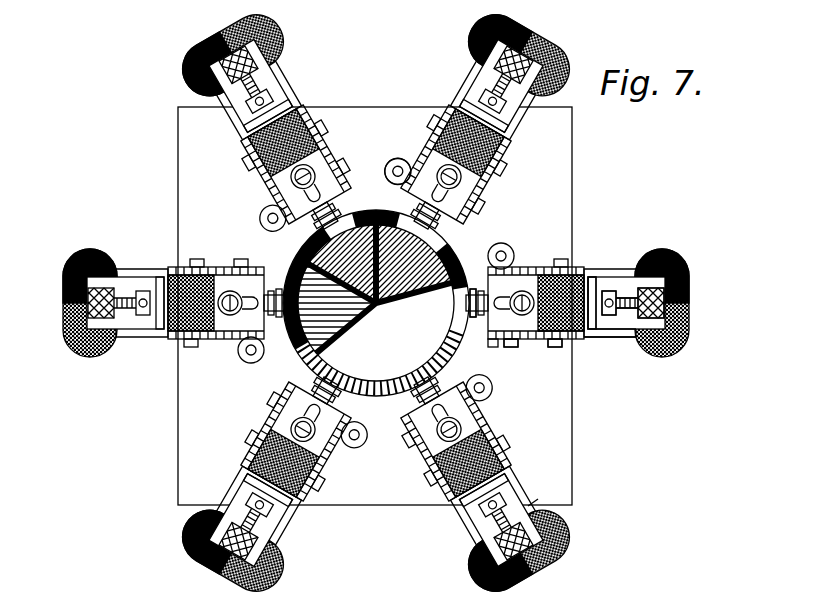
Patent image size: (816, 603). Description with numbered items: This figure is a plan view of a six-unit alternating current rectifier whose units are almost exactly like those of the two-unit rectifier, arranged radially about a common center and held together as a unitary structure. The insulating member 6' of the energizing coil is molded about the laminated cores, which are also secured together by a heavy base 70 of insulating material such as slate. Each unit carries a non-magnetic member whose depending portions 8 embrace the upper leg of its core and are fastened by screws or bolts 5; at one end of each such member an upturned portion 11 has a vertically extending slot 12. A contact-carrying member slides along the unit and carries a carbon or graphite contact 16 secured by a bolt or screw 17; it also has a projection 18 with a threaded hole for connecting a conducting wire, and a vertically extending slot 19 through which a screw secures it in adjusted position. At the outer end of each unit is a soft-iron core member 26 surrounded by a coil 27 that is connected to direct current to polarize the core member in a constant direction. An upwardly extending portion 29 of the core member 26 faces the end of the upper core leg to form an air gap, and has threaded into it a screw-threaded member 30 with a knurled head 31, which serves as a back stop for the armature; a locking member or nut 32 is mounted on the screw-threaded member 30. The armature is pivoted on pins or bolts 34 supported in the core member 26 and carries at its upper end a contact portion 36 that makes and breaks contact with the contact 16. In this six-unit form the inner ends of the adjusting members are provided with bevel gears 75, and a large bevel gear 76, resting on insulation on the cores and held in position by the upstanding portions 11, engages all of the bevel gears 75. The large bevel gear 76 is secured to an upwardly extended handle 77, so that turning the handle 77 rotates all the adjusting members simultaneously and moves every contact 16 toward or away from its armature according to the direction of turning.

The screws or bolts 5 is at (513, 347).
The insulation 6' is at (464, 263).
The depending portions 8 is at (490, 346).
The upturned portion 11 is at (473, 330).
The vertically extending slot 12 is at (392, 178).
The contact 16 is at (550, 271).
The bolt or screw 17 is at (550, 334).
The projection 18 is at (501, 246).
The vertically extending slot 19 is at (313, 188).
The core member 26 is at (534, 507).
The coil 27 is at (270, 32).
The upwardly extending portion 29 is at (610, 337).
The screw-threaded member 30 is at (630, 310).
The knurled head 31 is at (636, 286).
The locking member or nut 32 is at (611, 286).
The pins or bolts 34 is at (594, 341).
The contact portion 36 is at (593, 276).
The base 70 is at (568, 453).
The bevel gears 75 is at (458, 236).
The large bevel gear 76 is at (376, 303).
The handle 77 is at (376, 289).